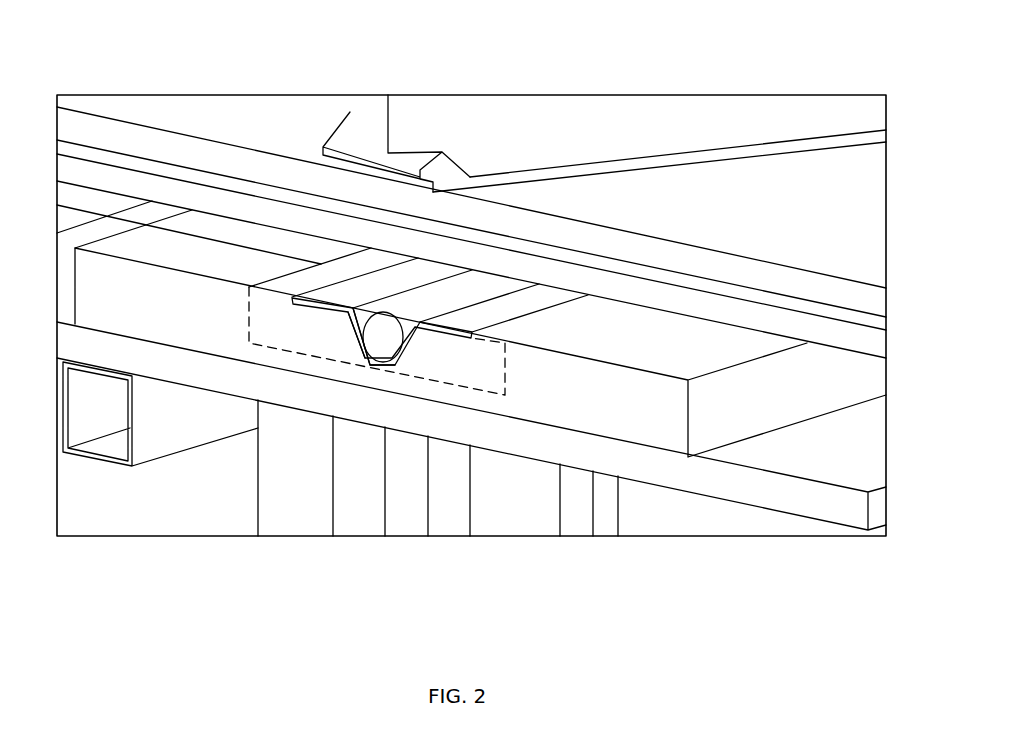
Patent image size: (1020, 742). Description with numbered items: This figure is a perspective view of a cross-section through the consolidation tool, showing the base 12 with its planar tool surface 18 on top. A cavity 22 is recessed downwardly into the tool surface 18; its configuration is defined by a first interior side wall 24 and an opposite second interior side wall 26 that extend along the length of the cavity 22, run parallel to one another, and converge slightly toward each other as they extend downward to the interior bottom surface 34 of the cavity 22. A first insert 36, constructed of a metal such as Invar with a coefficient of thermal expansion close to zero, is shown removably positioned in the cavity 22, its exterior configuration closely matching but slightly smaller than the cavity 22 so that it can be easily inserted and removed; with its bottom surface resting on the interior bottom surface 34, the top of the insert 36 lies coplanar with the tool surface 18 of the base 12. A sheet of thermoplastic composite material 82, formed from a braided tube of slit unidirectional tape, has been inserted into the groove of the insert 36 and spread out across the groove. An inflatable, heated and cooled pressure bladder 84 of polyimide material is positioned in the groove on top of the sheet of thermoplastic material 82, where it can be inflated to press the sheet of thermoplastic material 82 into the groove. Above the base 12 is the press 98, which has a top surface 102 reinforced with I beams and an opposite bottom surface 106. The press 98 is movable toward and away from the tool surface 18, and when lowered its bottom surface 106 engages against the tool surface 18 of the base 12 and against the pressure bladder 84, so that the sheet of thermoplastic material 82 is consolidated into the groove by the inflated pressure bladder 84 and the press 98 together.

The base 12 is at (95, 287).
The tool surface 18 is at (135, 252).
The cavity 22 is at (248, 322).
The first interior side wall 24 is at (255, 300).
The second interior side wall 26 is at (504, 378).
The interior bottom surface 34 is at (290, 345).
The first insert 36 is at (321, 272).
The sheet of thermoplastic composite material 82 is at (385, 273).
The pressure bladder 84 is at (448, 296).
The press 98 is at (637, 90).
The top surface 102 is at (733, 210).
The bottom surface 106 is at (742, 333).